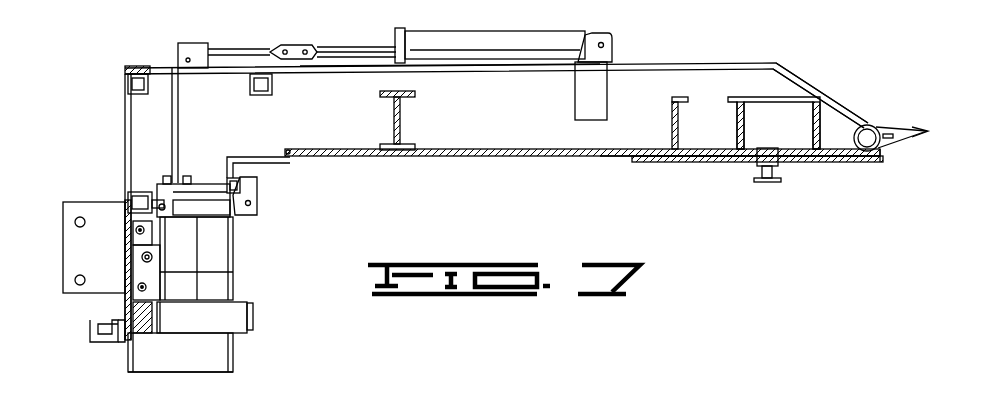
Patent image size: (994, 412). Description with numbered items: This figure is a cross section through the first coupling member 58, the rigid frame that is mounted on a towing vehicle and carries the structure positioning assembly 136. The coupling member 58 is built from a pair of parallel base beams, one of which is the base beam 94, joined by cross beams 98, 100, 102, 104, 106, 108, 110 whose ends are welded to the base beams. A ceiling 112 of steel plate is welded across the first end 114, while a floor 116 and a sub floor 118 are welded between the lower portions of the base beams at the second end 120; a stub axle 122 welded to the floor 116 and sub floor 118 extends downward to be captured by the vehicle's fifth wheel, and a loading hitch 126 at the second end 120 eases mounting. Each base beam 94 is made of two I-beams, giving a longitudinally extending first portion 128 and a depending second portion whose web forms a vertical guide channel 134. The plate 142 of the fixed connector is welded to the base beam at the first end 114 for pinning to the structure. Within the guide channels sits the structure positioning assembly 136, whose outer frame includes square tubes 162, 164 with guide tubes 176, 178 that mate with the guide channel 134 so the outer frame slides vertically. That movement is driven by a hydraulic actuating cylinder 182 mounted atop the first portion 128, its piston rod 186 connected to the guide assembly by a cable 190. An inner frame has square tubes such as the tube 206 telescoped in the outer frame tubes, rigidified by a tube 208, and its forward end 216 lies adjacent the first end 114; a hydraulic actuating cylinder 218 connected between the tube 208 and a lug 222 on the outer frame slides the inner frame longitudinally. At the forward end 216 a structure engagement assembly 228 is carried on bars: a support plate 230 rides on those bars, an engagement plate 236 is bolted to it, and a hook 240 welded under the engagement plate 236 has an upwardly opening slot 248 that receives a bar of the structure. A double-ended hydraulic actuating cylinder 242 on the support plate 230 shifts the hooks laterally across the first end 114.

The first coupling member 58 is at (748, 52).
The base beam 94 is at (635, 65).
The cross beam 98 is at (128, 73).
The cross beam 100 is at (272, 85).
The cross beam 102 is at (400, 116).
The cross beam 104 is at (672, 127).
The cross beam 106 is at (737, 125).
The cross beam 108 is at (840, 110).
The cross beam 110 is at (870, 124).
The ceiling 112 is at (158, 68).
The first end 114 is at (127, 104).
The floor 116 is at (622, 157).
The sub floor 118 is at (687, 163).
The second end 120 is at (884, 164).
The stub axle 122 is at (766, 182).
The loading hitch 126 is at (896, 128).
The first portion 128 is at (530, 130).
The guide channel 134 is at (145, 360).
The structure positioning assembly 136 is at (228, 326).
The plate 142 is at (78, 210).
The square tube 162 is at (205, 188).
The square tube 164 is at (167, 325).
The square tube 176 is at (160, 236).
The square tube 178 is at (217, 253).
The hydraulic actuating cylinder 182 is at (492, 40).
The piston rod 186 is at (356, 46).
The cable 190 is at (220, 45).
The square tube 206 is at (253, 316).
The tube 208 is at (126, 194).
The forward end 216 is at (128, 199).
The hydraulic actuating cylinder 218 is at (256, 200).
The lug 222 is at (243, 183).
The structure engagement assembly 228 is at (123, 292).
The support plate 230 is at (125, 265).
The engagement plate 236 is at (123, 242).
The hook 240 is at (108, 336).
The double-ended hydraulic actuating cylinder 242 is at (233, 273).
The upwardly opening slot 248 is at (95, 326).